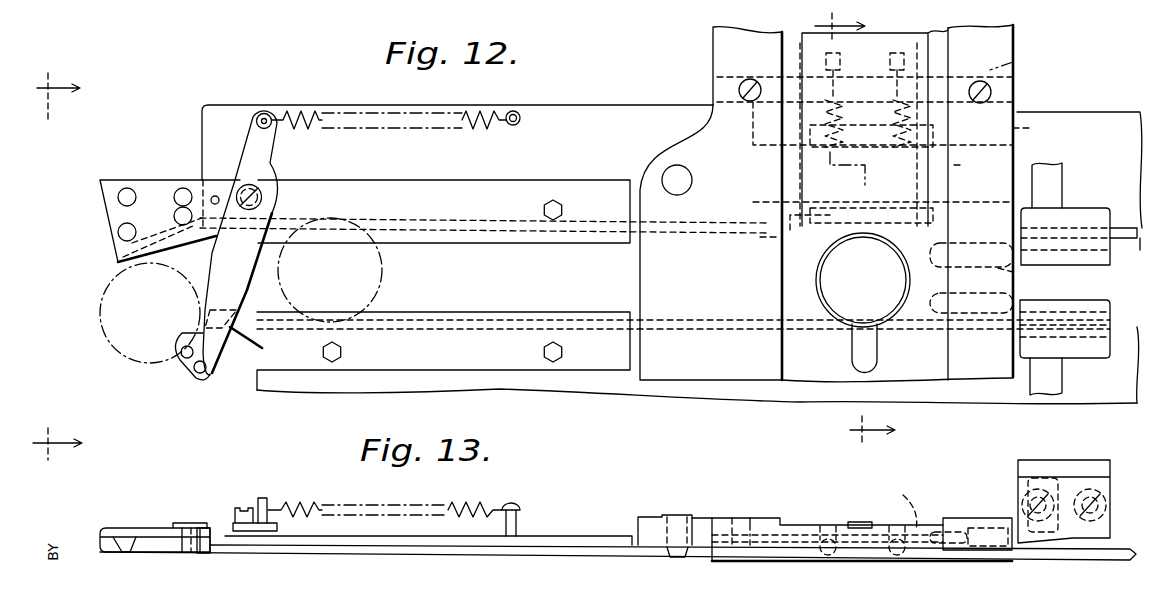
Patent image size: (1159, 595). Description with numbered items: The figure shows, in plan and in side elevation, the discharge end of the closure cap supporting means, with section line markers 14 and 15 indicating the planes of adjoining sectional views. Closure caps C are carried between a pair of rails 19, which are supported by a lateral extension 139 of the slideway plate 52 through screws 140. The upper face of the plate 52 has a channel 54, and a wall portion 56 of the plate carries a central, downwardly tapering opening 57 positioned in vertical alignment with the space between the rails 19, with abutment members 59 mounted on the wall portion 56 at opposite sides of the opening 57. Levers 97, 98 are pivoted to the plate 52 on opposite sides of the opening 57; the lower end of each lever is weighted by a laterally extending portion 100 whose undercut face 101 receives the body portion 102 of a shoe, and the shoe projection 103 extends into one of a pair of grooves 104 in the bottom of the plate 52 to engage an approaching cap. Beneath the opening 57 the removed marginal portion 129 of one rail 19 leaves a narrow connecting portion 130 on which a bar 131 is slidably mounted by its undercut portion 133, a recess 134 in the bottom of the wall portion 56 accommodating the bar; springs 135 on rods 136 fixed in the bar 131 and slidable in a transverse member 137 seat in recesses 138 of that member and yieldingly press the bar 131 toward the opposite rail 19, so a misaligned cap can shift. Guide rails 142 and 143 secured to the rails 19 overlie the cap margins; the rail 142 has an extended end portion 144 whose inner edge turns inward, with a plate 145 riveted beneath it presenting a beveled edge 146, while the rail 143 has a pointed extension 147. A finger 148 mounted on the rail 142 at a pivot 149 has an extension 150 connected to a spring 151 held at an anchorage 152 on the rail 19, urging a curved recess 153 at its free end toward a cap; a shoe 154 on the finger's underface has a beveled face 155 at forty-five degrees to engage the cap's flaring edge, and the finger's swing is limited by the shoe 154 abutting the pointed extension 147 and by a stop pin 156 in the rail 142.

In FIG. 12, the section line 14 is at (71, 262).
In FIG. 12, the section line 15 is at (866, 229).
In FIG. 12, the rails 19 is at (619, 104).
In FIG. 13, the rails 19 is at (590, 561).
In FIG. 12, the slideway plate 52 is at (730, 364).
In FIG. 13, the slideway plate 52 is at (757, 518).
In FIG. 12, the channel 54 is at (790, 378).
In FIG. 13, the channel 54 is at (780, 518).
In FIG. 12, the wall portion 56 is at (927, 378).
In FIG. 12, the opening 57 is at (838, 306).
In FIG. 13, the opening 57 is at (905, 505).
In FIG. 12, the abutment members 59 is at (866, 352).
In FIG. 13, the abutment members 59 is at (865, 521).
In FIG. 12, the lever 97 is at (1048, 377).
In FIG. 12, the lever 98 is at (1060, 178).
In FIG. 12, the weighted portion 100 is at (1092, 207).
In FIG. 13, the weighted portion 100 is at (1072, 462).
In FIG. 13, the undercut face 101 is at (1018, 478).
In FIG. 12, the shoe body portion 102 is at (1095, 298).
In FIG. 13, the shoe body portion 102 is at (1100, 486).
In FIG. 12, the shoe projection 103 is at (1013, 272).
In FIG. 13, the shoe projection 103 is at (1022, 544).
In FIG. 12, the grooves 104 is at (985, 240).
In FIG. 13, the grooves 104 is at (1000, 518).
In FIG. 12, the removed marginal portion 129 is at (760, 238).
In FIG. 12, the narrow connecting portion 130 is at (806, 237).
In FIG. 12, the bar 131 is at (960, 165).
In FIG. 12, the undercut portion 133 is at (858, 160).
In FIG. 12, the recess 134 is at (1013, 62).
In FIG. 12, the springs 135 is at (893, 113).
In FIG. 12, the rods 136 is at (905, 75).
In FIG. 13, the rods 136 is at (855, 562).
In FIG. 12, the transverse member 137 is at (1018, 86).
In FIG. 13, the transverse member 137 is at (766, 562).
In FIG. 12, the recesses 138 is at (790, 72).
In FIG. 13, the recesses 138 is at (822, 556).
In FIG. 12, the lateral extension 139 is at (647, 272).
In FIG. 13, the lateral extension 139 is at (645, 517).
In FIG. 12, the screws 140 is at (674, 165).
In FIG. 13, the screws 140 is at (675, 560).
In FIG. 12, the guide rail 142 is at (518, 187).
In FIG. 13, the guide rail 142 is at (576, 534).
In FIG. 12, the guide rail 143 is at (528, 364).
In FIG. 12, the extended end portion 144 is at (182, 253).
In FIG. 13, the extended end portion 144 is at (160, 527).
In FIG. 13, the plate 145 is at (100, 540).
In FIG. 12, the beveled edge 146 is at (152, 263).
In FIG. 13, the beveled edge 146 is at (148, 552).
In FIG. 12, the pointed extension 147 is at (240, 350).
In FIG. 12, the finger 148 is at (245, 273).
In FIG. 13, the finger 148 is at (220, 522).
In FIG. 12, the pivot 149 is at (256, 186).
In FIG. 13, the pivot 149 is at (245, 507).
In FIG. 12, the extension 150 is at (252, 128).
In FIG. 12, the spring 151 is at (311, 115).
In FIG. 13, the spring 151 is at (474, 501).
In FIG. 12, the spring anchorage 152 is at (519, 111).
In FIG. 13, the spring anchorage 152 is at (524, 502).
In FIG. 12, the curved recess 153 is at (185, 336).
In FIG. 12, the shoe 154 is at (187, 372).
In FIG. 13, the shoe 154 is at (210, 553).
In FIG. 13, the beveled face 155 is at (183, 554).
In FIG. 12, the stop pin 156 is at (215, 196).
In FIG. 13, the stop pin 156 is at (265, 500).
In FIG. 12, the closure caps C is at (140, 372).